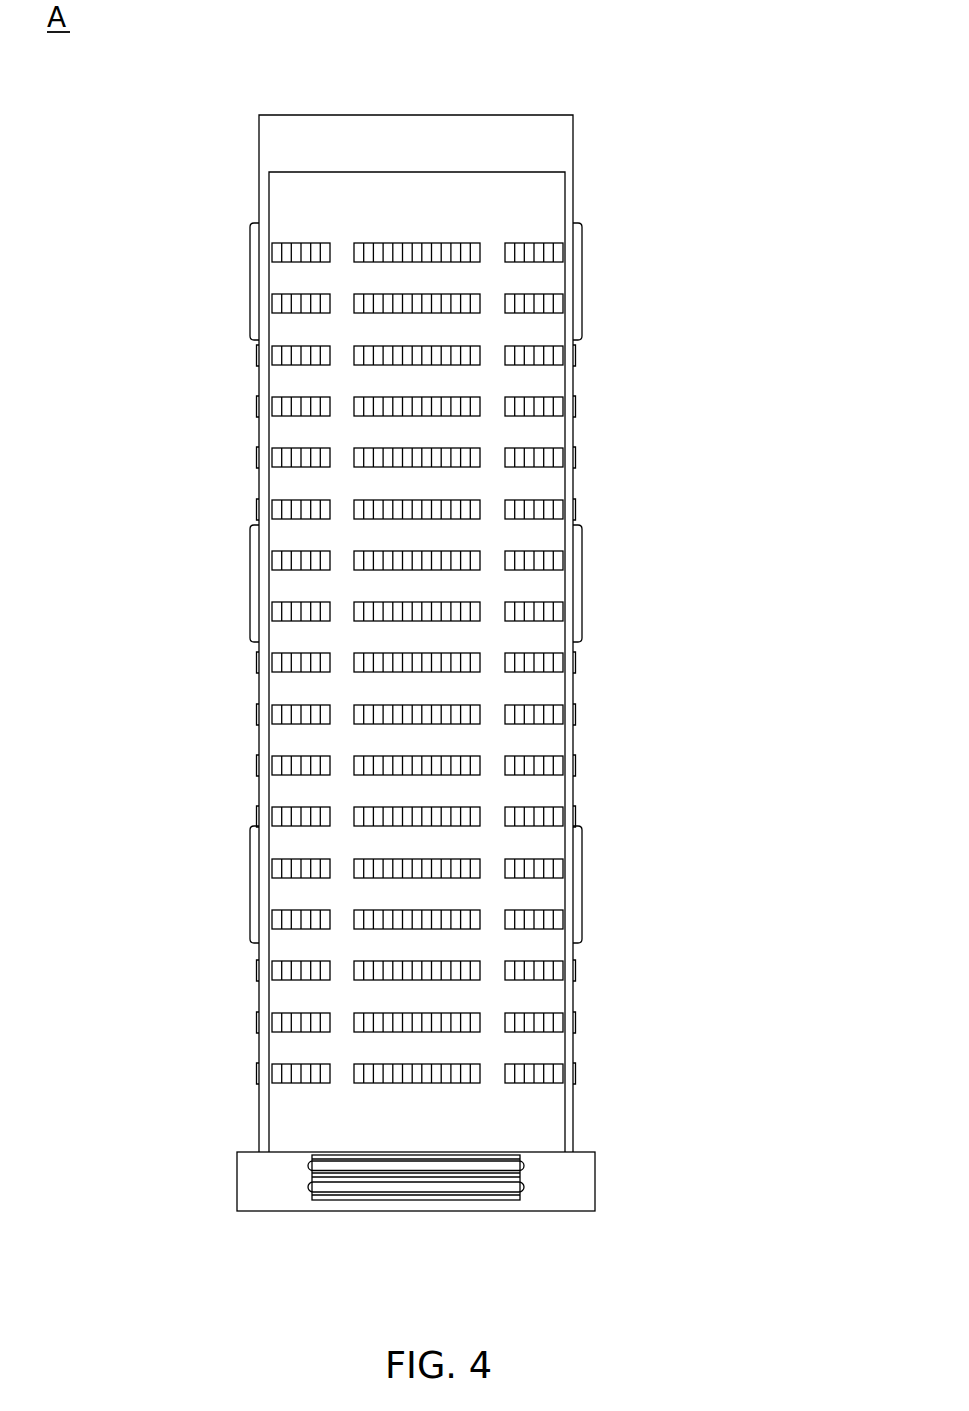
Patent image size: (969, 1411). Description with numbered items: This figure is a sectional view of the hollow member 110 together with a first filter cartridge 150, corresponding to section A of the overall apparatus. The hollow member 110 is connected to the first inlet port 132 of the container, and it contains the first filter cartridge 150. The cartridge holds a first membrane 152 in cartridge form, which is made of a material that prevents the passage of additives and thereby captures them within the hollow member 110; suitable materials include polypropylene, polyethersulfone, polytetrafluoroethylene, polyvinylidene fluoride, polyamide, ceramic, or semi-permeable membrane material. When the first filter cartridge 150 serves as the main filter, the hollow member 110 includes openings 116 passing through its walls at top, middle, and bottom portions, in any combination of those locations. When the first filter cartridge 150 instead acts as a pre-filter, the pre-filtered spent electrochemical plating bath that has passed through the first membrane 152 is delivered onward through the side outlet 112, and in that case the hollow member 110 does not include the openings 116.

The hollow member 110 is at (497, 115).
The first filter cartridge 150 is at (565, 198).
The first membrane 152 is at (552, 352).
The side outlet 112 is at (582, 580).
The openings 116 is at (258, 712).
The first inlet port 132 is at (595, 1181).